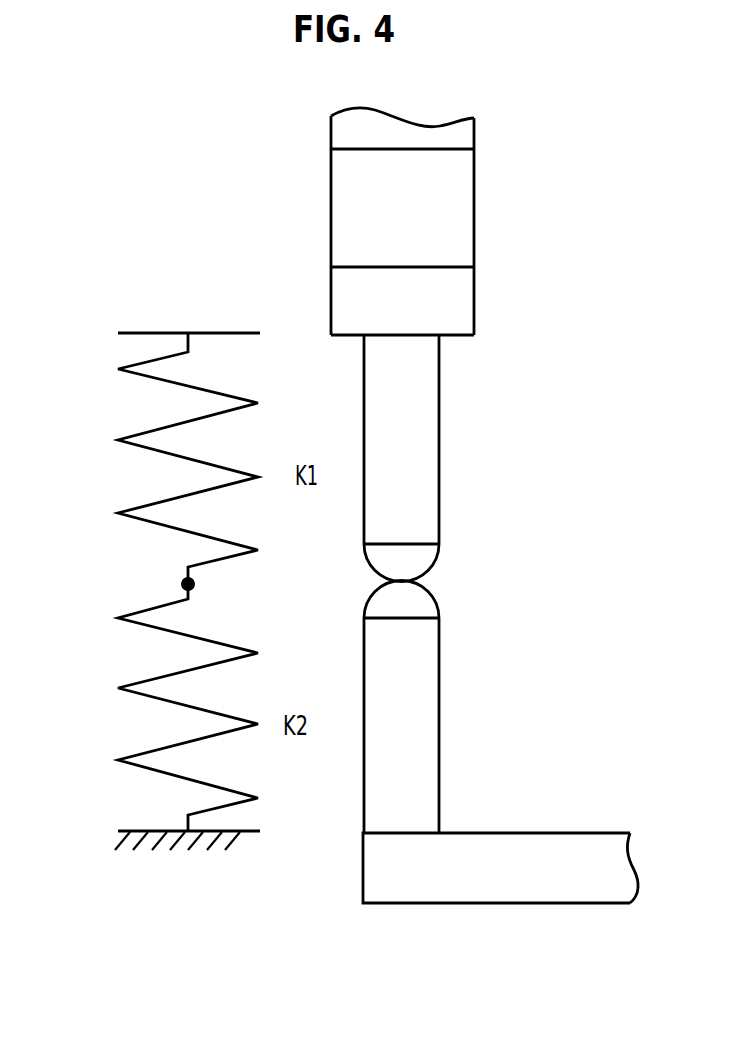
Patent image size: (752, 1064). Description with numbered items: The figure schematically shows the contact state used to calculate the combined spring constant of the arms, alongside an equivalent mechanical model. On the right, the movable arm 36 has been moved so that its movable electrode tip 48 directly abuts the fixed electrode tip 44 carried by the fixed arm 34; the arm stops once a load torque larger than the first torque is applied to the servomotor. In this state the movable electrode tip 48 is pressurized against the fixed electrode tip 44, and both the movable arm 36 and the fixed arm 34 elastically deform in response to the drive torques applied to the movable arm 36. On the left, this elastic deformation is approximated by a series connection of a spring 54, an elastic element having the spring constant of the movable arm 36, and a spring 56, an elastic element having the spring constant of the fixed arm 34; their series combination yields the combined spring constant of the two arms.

The fixed arm 34 is at (551, 833).
The movable arm 36 is at (423, 420).
The fixed electrode tip 44 is at (415, 607).
The movable electrode tip 48 is at (415, 563).
The spring 54 is at (140, 437).
The spring 56 is at (140, 686).